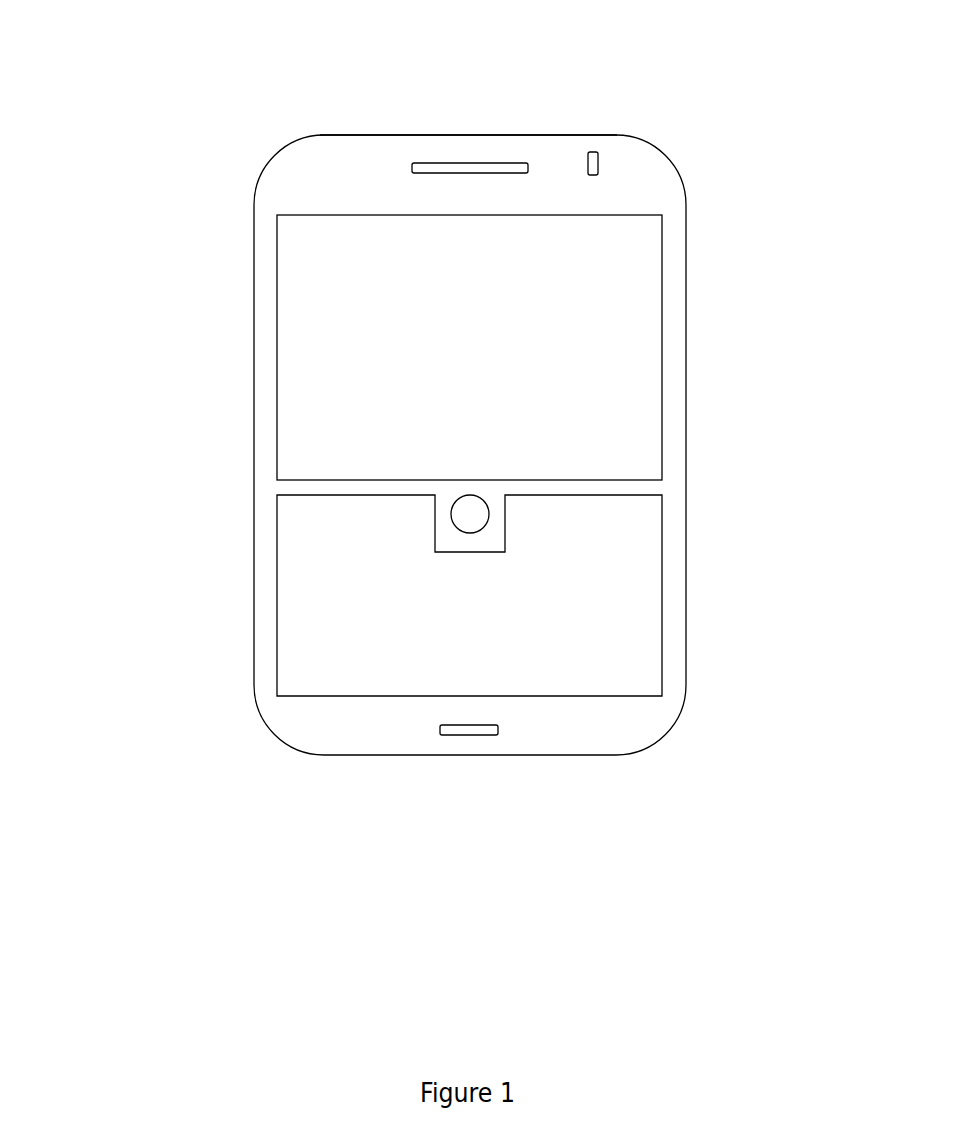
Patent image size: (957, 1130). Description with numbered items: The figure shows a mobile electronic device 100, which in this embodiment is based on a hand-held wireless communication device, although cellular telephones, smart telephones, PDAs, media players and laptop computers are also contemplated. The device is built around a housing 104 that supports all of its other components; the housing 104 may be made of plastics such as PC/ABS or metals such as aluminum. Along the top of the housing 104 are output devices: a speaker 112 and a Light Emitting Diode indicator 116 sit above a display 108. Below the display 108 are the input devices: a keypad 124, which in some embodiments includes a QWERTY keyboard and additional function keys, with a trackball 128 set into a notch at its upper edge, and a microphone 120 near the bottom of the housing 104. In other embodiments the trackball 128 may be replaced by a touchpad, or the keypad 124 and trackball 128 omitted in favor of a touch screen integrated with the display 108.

The mobile electronic device 100 is at (160, 123).
The housing 104 is at (470, 135).
The display 108 is at (662, 346).
The speaker 112 is at (410, 168).
The Light Emitting Diode indicator 116 is at (593, 152).
The microphone 120 is at (500, 729).
The keypad 124 is at (662, 596).
The trackball 128 is at (456, 500).